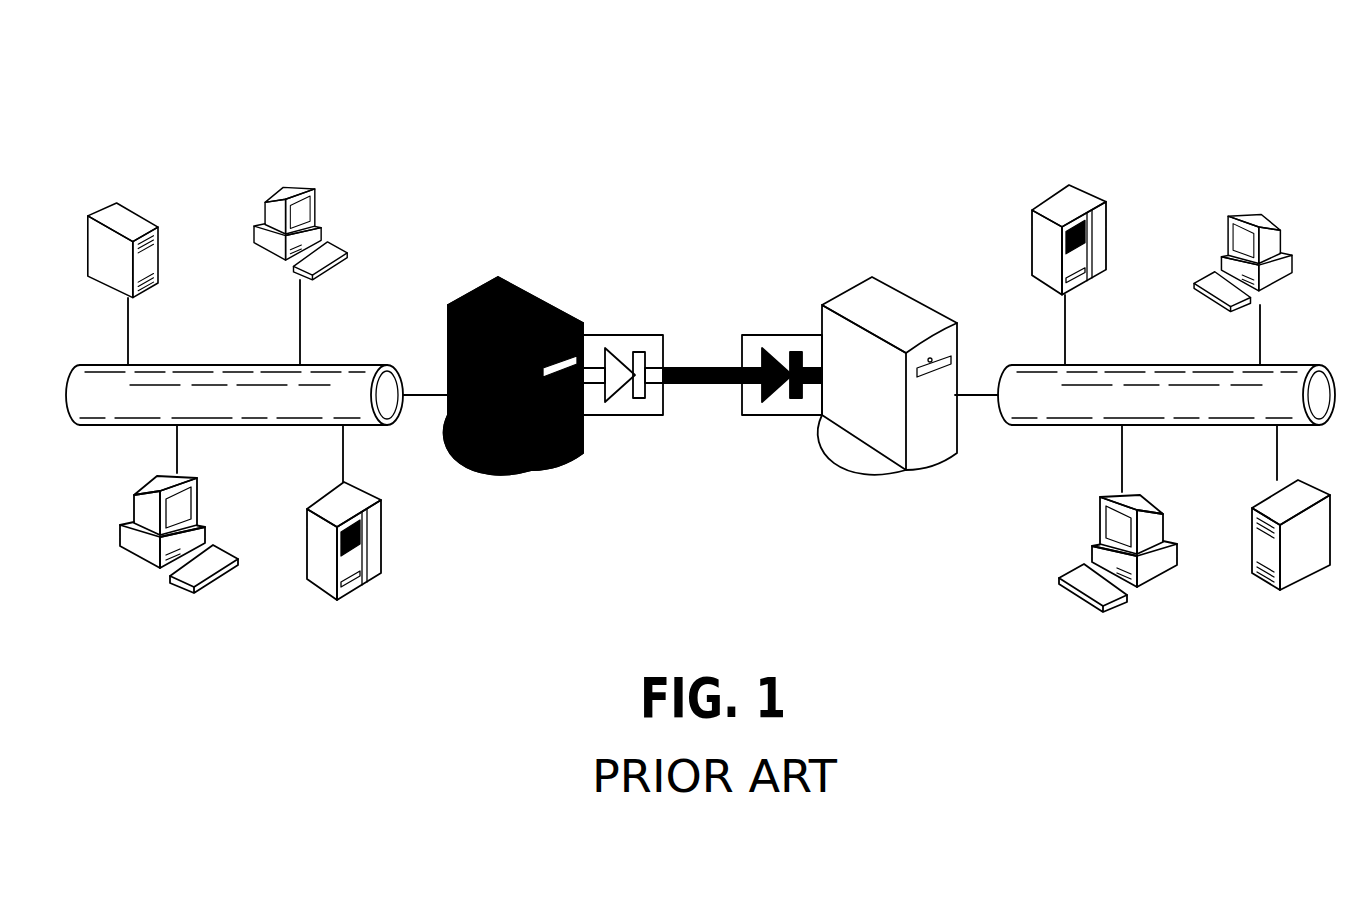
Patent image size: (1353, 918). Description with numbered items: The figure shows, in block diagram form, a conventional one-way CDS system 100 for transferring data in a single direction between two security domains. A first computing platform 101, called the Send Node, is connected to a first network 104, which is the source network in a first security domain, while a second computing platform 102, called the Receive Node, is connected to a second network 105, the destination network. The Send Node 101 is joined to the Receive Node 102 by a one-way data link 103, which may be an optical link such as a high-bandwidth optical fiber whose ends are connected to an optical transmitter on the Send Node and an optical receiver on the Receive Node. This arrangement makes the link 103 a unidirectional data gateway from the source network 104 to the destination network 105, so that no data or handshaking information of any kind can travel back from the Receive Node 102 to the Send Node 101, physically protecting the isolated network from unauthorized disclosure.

The one-way CDS system 100 is at (713, 130).
The first computing platform 101 is at (517, 290).
The second computing platform 102 is at (868, 290).
The one-way data link 103 is at (713, 385).
The first network 104 is at (210, 390).
The second network 105 is at (1131, 390).